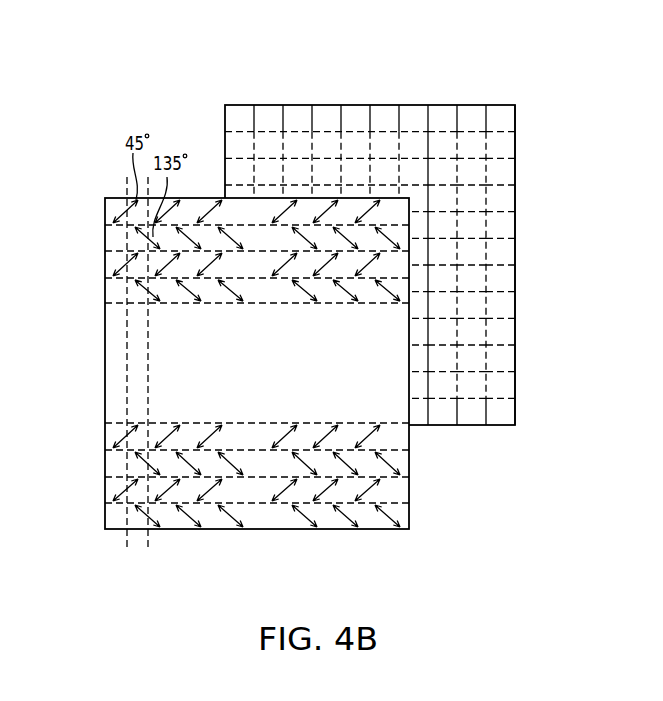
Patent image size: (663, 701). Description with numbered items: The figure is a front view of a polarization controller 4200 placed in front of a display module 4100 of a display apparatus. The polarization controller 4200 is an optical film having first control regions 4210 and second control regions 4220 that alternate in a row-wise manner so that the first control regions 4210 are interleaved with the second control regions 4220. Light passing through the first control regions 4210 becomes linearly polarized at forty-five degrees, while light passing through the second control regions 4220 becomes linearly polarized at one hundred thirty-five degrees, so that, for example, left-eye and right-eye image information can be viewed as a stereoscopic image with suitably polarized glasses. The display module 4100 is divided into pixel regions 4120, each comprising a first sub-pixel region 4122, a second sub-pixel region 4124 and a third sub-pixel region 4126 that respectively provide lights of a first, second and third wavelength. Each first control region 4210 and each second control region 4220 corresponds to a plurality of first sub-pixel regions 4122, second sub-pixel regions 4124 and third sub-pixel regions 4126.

The display module 4100 is at (327, 105).
The pixel region 4120 is at (530, 218).
The first sub-pixel region 4122 is at (539, 236).
The second sub-pixel region 4124 is at (468, 112).
The third sub-pixel region 4126 is at (440, 112).
The polarization controller 4200 is at (262, 363).
The first control region 4210 is at (108, 212).
The second control region 4220 is at (108, 240).